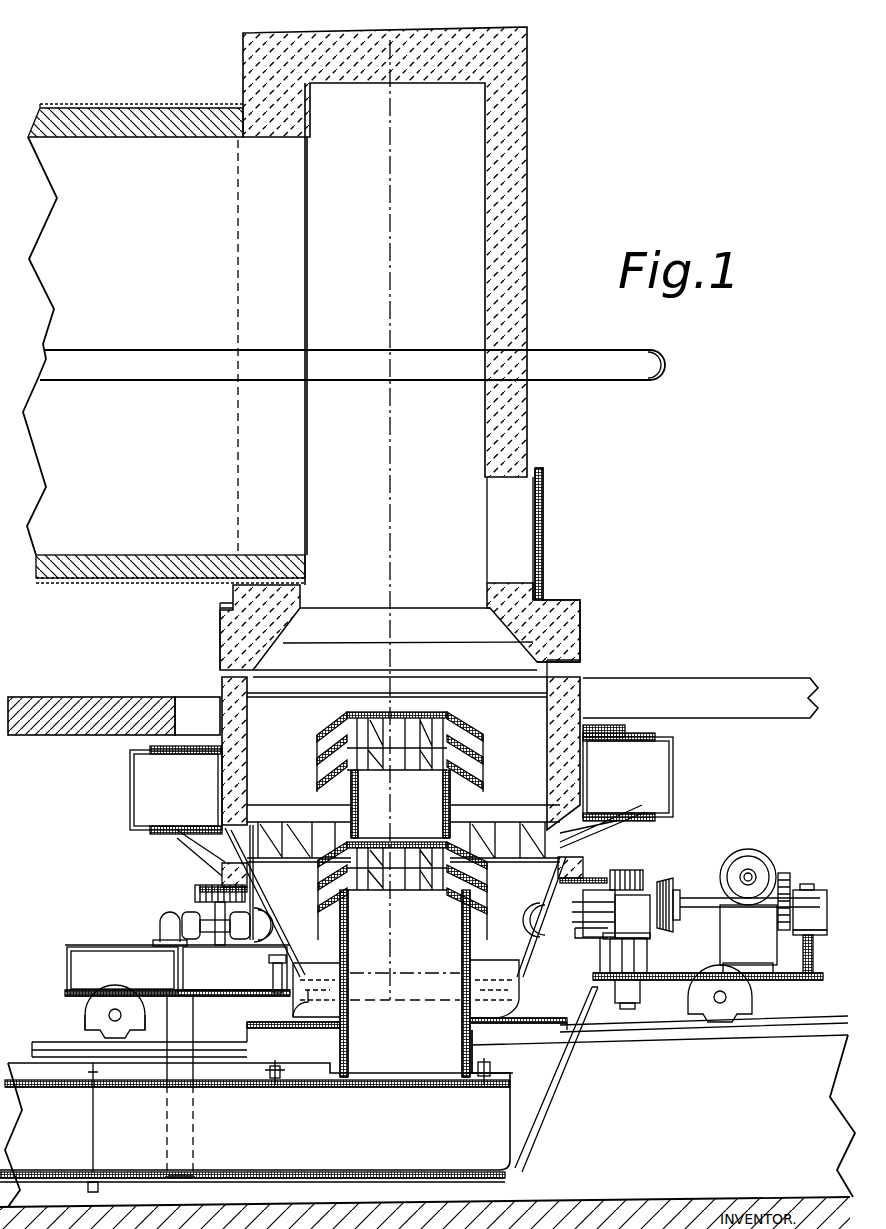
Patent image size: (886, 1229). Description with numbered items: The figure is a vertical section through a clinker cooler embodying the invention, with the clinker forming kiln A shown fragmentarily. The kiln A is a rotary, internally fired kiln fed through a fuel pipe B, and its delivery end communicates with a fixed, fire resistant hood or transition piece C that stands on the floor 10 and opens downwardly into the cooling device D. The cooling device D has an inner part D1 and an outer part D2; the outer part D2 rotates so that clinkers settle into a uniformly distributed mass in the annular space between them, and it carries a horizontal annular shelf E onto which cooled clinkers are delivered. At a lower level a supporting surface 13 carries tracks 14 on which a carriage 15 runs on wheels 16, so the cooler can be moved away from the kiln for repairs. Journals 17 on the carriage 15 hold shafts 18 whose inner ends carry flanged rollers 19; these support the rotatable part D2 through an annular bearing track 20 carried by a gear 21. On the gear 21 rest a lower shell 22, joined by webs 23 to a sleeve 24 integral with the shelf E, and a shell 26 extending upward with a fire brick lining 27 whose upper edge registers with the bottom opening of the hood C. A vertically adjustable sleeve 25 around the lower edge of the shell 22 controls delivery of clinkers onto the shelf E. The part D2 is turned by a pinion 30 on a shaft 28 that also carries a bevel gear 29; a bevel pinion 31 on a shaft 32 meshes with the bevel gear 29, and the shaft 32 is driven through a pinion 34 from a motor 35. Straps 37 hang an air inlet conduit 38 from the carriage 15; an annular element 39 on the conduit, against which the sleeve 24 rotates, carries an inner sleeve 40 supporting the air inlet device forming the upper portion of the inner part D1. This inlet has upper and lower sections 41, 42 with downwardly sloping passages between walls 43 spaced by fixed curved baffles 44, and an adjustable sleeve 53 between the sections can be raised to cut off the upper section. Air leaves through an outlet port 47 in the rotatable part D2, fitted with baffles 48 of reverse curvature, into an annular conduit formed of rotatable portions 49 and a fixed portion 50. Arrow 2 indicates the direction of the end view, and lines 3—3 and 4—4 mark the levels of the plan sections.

The end view direction arrow 2 is at (345, 50).
The section line 3— 3 is at (150, 912).
The section line 4— 4 is at (210, 676).
The clinker forming kiln A is at (146, 165).
The fuel pipe B is at (560, 355).
The hood or transition piece C is at (507, 205).
The clinker cooling device D is at (629, 775).
The inner part D1 is at (320, 728).
The outer rotatable part D2 is at (585, 735).
The horizontal annular shelf E is at (528, 1047).
The floor 10 is at (62, 733).
The supporting surface 13 is at (15, 1060).
The tracks 14 is at (45, 1042).
The carriage 15 is at (90, 970).
The wheels 16 is at (140, 1020).
The journals 17 is at (160, 928).
The shafts 18 is at (212, 942).
The flanged roller 19 is at (265, 935).
The annular bearing track 20 is at (232, 942).
The gear 21 is at (195, 893).
The lower shell 22 is at (580, 948).
The webs 23 is at (310, 975).
The sleeve 24 is at (472, 948).
The vertically adjustable sleeve 25 is at (528, 1003).
The shell 26 is at (603, 762).
The heat resistant lining 27 is at (245, 750).
The shaft 28 is at (648, 958).
The bevel gear 29 is at (605, 950).
The pinion 30 is at (657, 878).
The bevel pinion 31 is at (682, 888).
The shaft 32 is at (700, 898).
The pinion 34 is at (785, 870).
The motor 35 is at (748, 850).
The straps 37 is at (193, 1065).
The air inlet conduit 38 is at (427, 1129).
The annular element 39 is at (480, 1083).
The inner sleeve 40 is at (348, 1030).
The upper inlet section 41 is at (496, 731).
The lower inlet section 42 is at (487, 900).
The walls 43 is at (483, 757).
The spacing baffles 44 is at (318, 775).
The outlet port 47 is at (605, 832).
The spacing baffles 48 is at (212, 826).
The annular portions 49 is at (618, 735).
The fixed portion 50 is at (675, 768).
The adjustable sleeve 53 is at (360, 800).